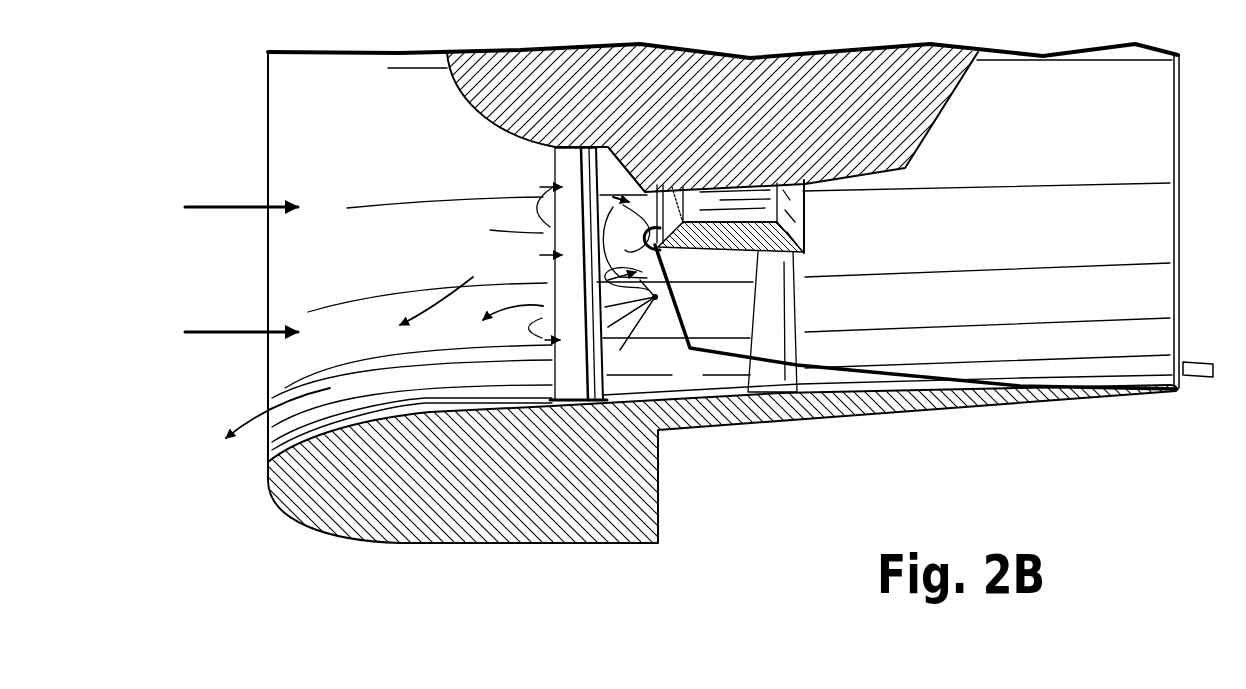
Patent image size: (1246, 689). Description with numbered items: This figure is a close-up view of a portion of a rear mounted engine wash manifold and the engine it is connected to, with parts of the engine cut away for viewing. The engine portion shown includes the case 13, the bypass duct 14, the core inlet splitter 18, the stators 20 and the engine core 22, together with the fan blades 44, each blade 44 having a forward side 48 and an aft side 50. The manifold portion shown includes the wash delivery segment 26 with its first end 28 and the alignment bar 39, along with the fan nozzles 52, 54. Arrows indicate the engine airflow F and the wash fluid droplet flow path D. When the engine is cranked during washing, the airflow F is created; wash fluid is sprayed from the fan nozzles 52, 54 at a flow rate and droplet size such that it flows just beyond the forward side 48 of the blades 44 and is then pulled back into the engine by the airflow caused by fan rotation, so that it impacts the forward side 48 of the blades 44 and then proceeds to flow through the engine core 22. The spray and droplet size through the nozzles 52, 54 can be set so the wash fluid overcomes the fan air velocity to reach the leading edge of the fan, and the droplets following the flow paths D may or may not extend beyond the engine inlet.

The case 13 is at (780, 413).
The bypass duct 14 is at (973, 313).
The core inlet splitter 18 is at (636, 238).
The stators 20 is at (667, 198).
The engine core 22 is at (757, 197).
The wash delivery segment 26 is at (688, 348).
The first end 28 is at (624, 223).
The alignment bar 39 is at (810, 368).
The blades 44 is at (597, 387).
The forward side 48 is at (553, 165).
The aft side 50 is at (660, 428).
The fan nozzle 52 is at (657, 297).
The fan nozzle 54 is at (657, 302).
The engine airflow F is at (233, 270).
The wash fluid droplet flow path D is at (553, 186).